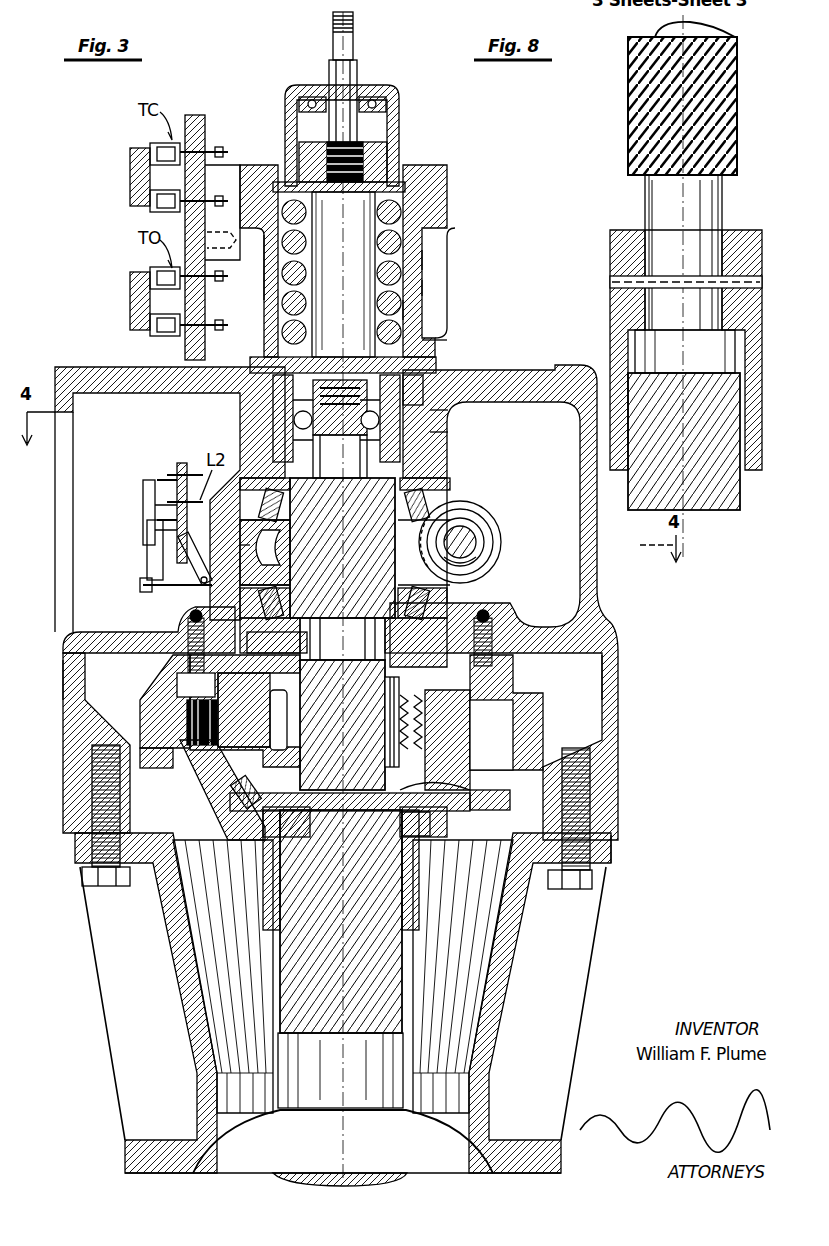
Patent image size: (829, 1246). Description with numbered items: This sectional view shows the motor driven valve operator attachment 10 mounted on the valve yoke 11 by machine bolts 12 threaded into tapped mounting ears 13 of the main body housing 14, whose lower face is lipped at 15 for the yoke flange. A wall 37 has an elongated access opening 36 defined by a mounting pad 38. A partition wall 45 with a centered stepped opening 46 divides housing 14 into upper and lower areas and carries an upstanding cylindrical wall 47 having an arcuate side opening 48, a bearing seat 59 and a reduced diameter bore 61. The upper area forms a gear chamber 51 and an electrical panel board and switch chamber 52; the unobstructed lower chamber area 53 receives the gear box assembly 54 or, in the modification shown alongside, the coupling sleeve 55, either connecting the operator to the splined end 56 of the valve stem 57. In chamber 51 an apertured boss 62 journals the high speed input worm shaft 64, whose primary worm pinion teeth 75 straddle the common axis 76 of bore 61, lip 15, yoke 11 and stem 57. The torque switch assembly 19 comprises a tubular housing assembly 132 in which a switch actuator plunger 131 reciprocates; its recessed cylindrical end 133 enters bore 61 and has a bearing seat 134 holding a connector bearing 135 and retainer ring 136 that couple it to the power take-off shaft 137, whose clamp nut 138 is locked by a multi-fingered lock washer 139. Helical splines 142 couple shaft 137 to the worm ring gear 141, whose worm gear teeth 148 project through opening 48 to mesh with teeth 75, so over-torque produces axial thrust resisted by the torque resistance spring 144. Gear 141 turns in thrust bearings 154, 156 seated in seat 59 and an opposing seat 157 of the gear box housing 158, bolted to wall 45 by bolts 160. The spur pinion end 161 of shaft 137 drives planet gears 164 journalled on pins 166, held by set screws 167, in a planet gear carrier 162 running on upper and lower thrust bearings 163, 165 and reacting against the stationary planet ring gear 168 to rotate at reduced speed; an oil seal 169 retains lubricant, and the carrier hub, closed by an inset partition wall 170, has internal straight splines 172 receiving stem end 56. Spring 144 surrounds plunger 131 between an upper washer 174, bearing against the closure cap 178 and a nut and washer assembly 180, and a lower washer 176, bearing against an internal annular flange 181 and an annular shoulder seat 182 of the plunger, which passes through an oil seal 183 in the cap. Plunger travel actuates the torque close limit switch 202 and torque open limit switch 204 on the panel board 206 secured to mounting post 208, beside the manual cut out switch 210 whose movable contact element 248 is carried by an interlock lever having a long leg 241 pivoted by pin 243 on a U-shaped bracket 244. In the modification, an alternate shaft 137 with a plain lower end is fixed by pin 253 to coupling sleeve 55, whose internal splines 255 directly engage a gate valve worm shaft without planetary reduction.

In FIG. 3, the motor driven valve operator attachment 10 is at (610, 646).
In FIG. 3, the valve yoke 11 is at (576, 966).
In FIG. 3, the machine bolts 12 is at (108, 880).
In FIG. 3, the tapped mounting ears 13 is at (96, 748).
In FIG. 3, the main body housing 14 is at (582, 592).
In FIG. 3, the annular lip 15 is at (618, 830).
In FIG. 3, the torque switch assembly 19 is at (426, 328).
In FIG. 3, the elongated access opening 36 is at (56, 648).
In FIG. 3, the wall 37 is at (63, 790).
In FIG. 3, the mounting pad 38 is at (62, 372).
In FIG. 3, the partition wall 45 is at (150, 632).
In FIG. 3, the stepped opening 46 is at (470, 612).
In FIG. 3, the cylindrical upstanding wall 47 is at (340, 645).
In FIG. 3, the arcuate side opening 48 is at (432, 496).
In FIG. 3, the gear chamber 51 is at (570, 398).
In FIG. 3, the electrical panel board and switch chamber 52 is at (167, 443).
In FIG. 3, the lower chamber area 53 is at (520, 815).
In FIG. 3, the gear box assembly 54 is at (518, 690).
In FIG. 8, the coupling sleeve 55 is at (596, 250).
In FIG. 3, the splined end 56 is at (400, 952).
In FIG. 3, the valve stem 57 is at (402, 1060).
In FIG. 3, the bearing seat 59 is at (420, 478).
In FIG. 3, the reduced diameter bore 61 is at (410, 388).
In FIG. 3, the cylindrical apertured boss 62 is at (492, 533).
In FIG. 3, the high speed input worm shaft 64 is at (476, 542).
In FIG. 3, the primary worm pinion teeth 75 is at (470, 522).
In FIG. 3, the common axis 76 is at (357, 48).
In FIG. 3, the switch actuator plunger 131 is at (410, 262).
In FIG. 3, the tubular housing assembly 132 is at (422, 286).
In FIG. 3, the recessed cylindrical end 133 is at (440, 420).
In FIG. 3, the bearing seat 134 is at (300, 425).
In FIG. 3, the connector bearing 135 is at (440, 440).
In FIG. 3, the retainer ring 136 is at (336, 418).
In FIG. 3, the power take-off shaft 137 is at (353, 459).
In FIG. 3, the clamp nut 138 is at (438, 350).
In FIG. 3, the multi-fingered lock washer 139 is at (343, 274).
In FIG. 3, the worm ring gear 141 is at (359, 548).
In FIG. 3, the helical splines 142 is at (361, 639).
In FIG. 3, the torque resistance spring 144 is at (406, 312).
In FIG. 3, the worm gear teeth 148 is at (478, 558).
In FIG. 3, the thrust bearing 154 is at (265, 551).
In FIG. 3, the thrust bearing 156 is at (342, 639).
In FIG. 3, the opposing seat 157 is at (440, 604).
In FIG. 3, the gear box housing 158 is at (160, 682).
In FIG. 3, the bolts 160 is at (238, 711).
In FIG. 3, the spur pinion end 161 is at (300, 762).
In FIG. 3, the planet gear carrier 162 is at (244, 710).
In FIG. 3, the upper thrust bearing 163 is at (296, 662).
In FIG. 3, the planet gears 164 is at (397, 768).
In FIG. 3, the lower thrust bearing 165 is at (222, 812).
In FIG. 3, the pins 166 is at (400, 722).
In FIG. 3, the set screws 167 is at (480, 784).
In FIG. 3, the planet ring gear 168 is at (520, 715).
In FIG. 3, the oil seal 169 is at (426, 838).
In FIG. 3, the inset partition wall 170 is at (366, 812).
In FIG. 3, the internal straight splines 172 is at (412, 890).
In FIG. 3, the upper washer 174 is at (298, 158).
In FIG. 3, the lower washer 176 is at (268, 338).
In FIG. 3, the closure cap 178 is at (290, 112).
In FIG. 3, the nut and washer assembly 180 is at (400, 154).
In FIG. 3, the internal annular flange 181 is at (262, 350).
In FIG. 3, the annular shoulder seat 182 is at (360, 76).
In FIG. 3, the oil seal 183 is at (386, 96).
In FIG. 3, the torque close limit switch 202 is at (118, 162).
In FIG. 3, the torque open limit switch 204 is at (118, 286).
In FIG. 3, the panel board 206 is at (196, 115).
In FIG. 3, the mounting post 208 is at (240, 250).
In FIG. 3, the manual cut out switch 210 is at (162, 478).
In FIG. 3, the long leg 241 is at (142, 570).
In FIG. 3, the pin 243 is at (244, 548).
In FIG. 3, the U-shaped bracket 244 is at (204, 584).
In FIG. 3, the movable contact element 248 is at (140, 524).
In FIG. 8, the pin 253 is at (612, 282).
In FIG. 8, the internal splines 255 is at (694, 481).